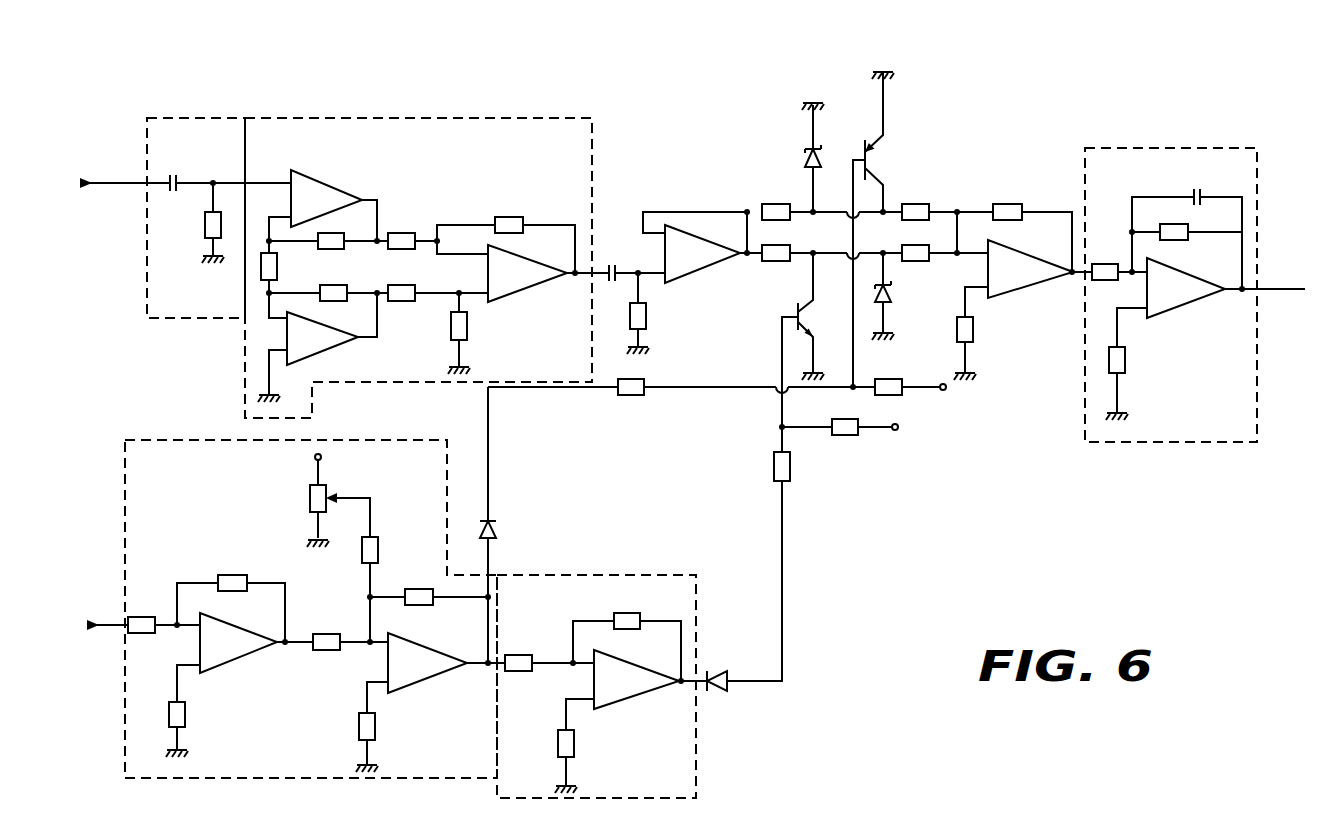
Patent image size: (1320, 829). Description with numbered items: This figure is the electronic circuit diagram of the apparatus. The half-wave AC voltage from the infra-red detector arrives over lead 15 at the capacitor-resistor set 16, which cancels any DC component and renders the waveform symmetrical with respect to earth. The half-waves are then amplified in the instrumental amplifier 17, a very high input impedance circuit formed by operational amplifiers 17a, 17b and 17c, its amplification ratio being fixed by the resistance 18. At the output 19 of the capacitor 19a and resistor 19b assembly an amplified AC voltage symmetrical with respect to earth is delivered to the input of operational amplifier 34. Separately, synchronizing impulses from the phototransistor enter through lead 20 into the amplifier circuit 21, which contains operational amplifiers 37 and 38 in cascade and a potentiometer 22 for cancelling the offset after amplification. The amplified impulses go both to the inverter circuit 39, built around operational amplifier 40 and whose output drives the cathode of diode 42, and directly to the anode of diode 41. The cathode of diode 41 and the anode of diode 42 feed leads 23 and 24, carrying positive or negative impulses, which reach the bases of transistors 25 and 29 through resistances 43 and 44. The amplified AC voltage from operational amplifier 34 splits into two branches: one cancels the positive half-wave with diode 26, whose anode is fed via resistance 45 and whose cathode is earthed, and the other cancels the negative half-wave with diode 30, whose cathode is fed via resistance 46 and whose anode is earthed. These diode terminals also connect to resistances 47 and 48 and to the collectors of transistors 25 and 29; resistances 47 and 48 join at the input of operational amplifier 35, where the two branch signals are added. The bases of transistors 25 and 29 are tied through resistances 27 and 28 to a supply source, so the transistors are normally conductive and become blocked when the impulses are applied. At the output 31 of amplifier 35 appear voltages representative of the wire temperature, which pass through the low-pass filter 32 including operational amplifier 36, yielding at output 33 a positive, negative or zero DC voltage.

The lead 15 is at (97, 183).
The capacitor-resistor set 16 is at (198, 118).
The instrumental amplifier 17 is at (427, 242).
The operational amplifier 17a is at (319, 181).
The operational amplifier 17b is at (325, 351).
The operational amplifier 17c is at (533, 286).
The resistance 18 is at (277, 266).
The output 19 is at (652, 292).
The capacitor 19a is at (608, 282).
The resistor 19b is at (646, 316).
The lead 20 is at (118, 625).
The amplifier circuit 21 is at (301, 587).
The potentiometer 22 is at (310, 498).
The lead 23 is at (489, 421).
The lead 24 is at (782, 522).
The transistor 25 is at (873, 160).
The diode 26 is at (805, 158).
The resistance 27 is at (893, 390).
The resistance 28 is at (845, 433).
The transistor 29 is at (796, 318).
The diode 30 is at (893, 292).
The output 31 is at (1074, 270).
The low-pass filter 32 is at (1171, 266).
The output 33 is at (1293, 291).
The operational amplifier 34 is at (690, 277).
The operational amplifier 35 is at (1013, 290).
The operational amplifier 36 is at (1172, 310).
The operational amplifier 37 is at (228, 663).
The operational amplifier 38 is at (408, 685).
The inverter circuit 39 is at (634, 687).
The operational amplifier 40 is at (625, 699).
The diode 41 is at (495, 533).
The diode 42 is at (717, 672).
The resistance 43 is at (630, 395).
The resistance 44 is at (774, 462).
The resistance 45 is at (768, 204).
The resistance 46 is at (789, 245).
The resistance 47 is at (918, 204).
The resistance 48 is at (905, 245).